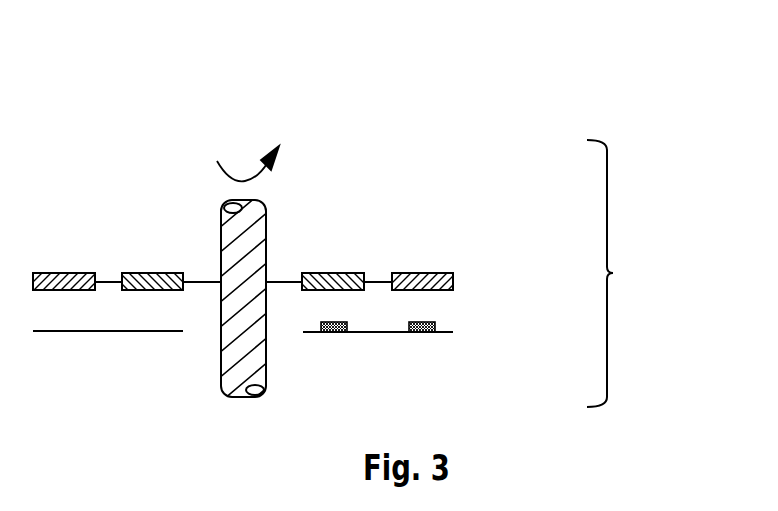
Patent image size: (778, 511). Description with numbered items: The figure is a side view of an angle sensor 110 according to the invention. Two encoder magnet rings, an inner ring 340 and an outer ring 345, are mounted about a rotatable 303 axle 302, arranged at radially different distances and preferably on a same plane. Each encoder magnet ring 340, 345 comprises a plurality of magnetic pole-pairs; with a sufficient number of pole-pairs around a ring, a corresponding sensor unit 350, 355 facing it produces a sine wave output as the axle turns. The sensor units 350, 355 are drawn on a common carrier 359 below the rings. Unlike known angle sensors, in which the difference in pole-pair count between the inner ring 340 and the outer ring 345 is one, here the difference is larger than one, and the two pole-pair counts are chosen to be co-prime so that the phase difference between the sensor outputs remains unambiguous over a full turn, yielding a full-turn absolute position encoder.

The angle sensor 110 is at (613, 273).
The axle 302 is at (267, 224).
The rotatable 303 is at (243, 180).
The inner ring 340 is at (330, 273).
The outer ring 345 is at (423, 273).
The sensor unit 350 is at (333, 322).
The sensor unit 355 is at (425, 322).
The substrate 359 is at (368, 333).